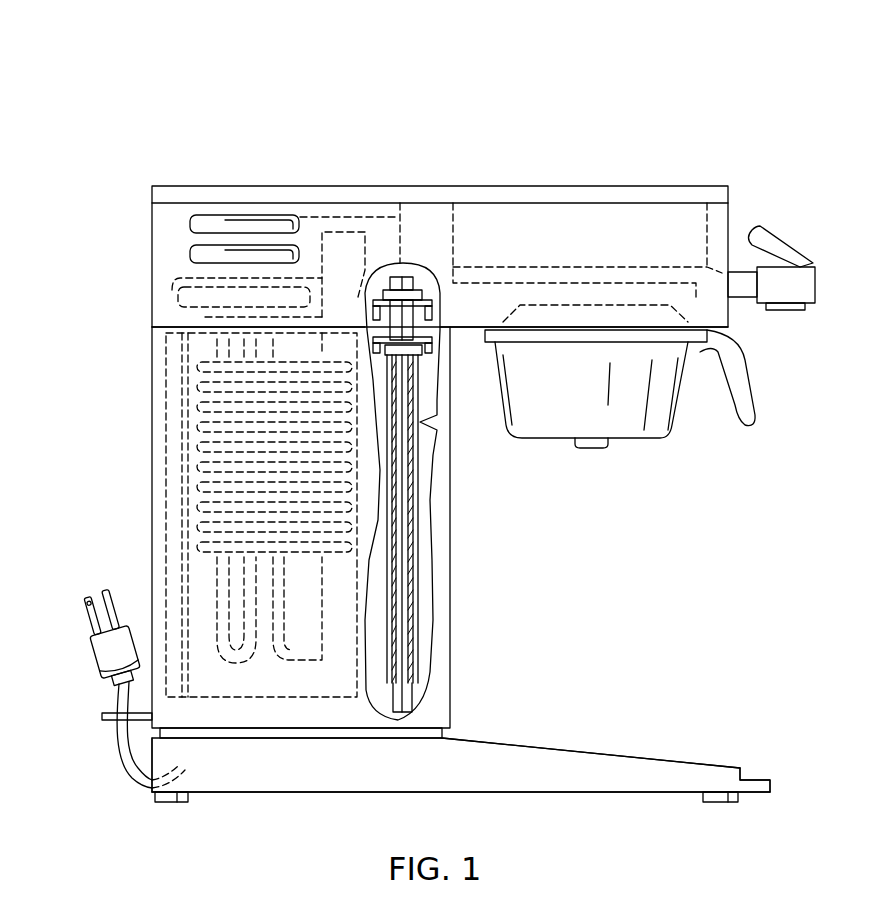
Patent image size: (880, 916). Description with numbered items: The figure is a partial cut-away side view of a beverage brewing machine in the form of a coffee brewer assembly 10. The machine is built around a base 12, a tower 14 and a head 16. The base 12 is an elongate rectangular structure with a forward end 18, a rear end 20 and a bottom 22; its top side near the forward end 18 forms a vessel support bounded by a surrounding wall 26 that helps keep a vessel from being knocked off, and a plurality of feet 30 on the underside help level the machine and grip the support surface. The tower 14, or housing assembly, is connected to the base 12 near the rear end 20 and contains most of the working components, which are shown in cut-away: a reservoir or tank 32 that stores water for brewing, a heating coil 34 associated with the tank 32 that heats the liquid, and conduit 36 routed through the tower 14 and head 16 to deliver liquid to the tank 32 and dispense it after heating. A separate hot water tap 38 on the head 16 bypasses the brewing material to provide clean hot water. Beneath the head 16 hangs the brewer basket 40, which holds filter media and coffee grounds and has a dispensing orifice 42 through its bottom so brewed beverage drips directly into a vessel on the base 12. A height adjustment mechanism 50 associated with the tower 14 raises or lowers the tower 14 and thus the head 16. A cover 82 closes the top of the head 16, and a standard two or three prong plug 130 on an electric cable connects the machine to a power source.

The coffee brewer assembly 10 is at (638, 82).
The base 12 is at (456, 785).
The tower 14 is at (152, 486).
The head 16 is at (446, 229).
The forward end 18 is at (775, 788).
The rear end 20 is at (143, 783).
The bottom 22 is at (475, 795).
The surrounding wall 26 is at (563, 764).
The feet 30 is at (170, 802).
The tank 32 is at (265, 697).
The heating coil 34 is at (228, 455).
The conduit 36 is at (481, 267).
The hot water tap 38 is at (806, 297).
The brewer basket 40 is at (620, 407).
The dispensing orifice 42 is at (592, 448).
The height adjustment mechanism 50 is at (430, 490).
The top cover 82 is at (288, 186).
The plug 130 is at (108, 663).